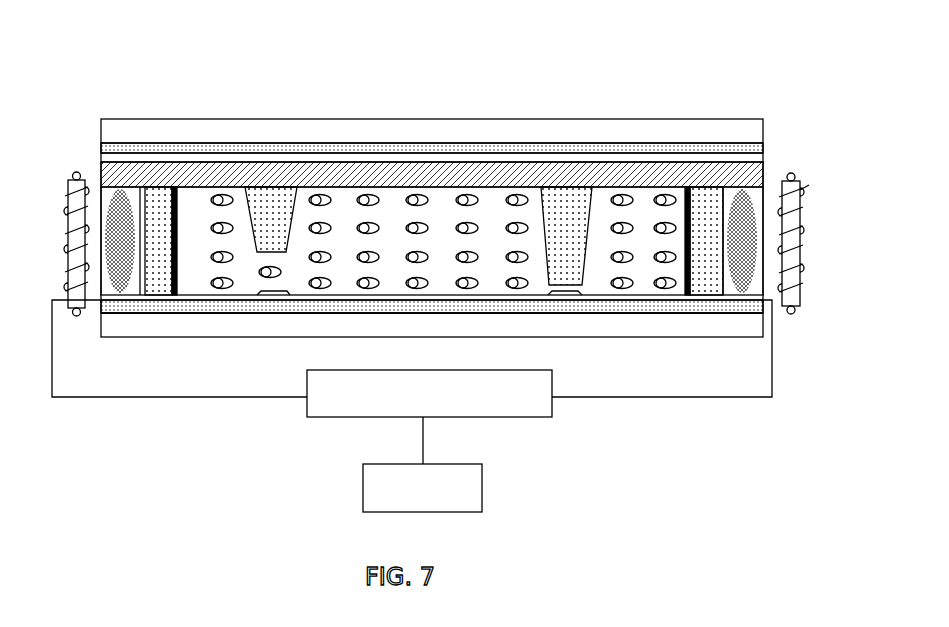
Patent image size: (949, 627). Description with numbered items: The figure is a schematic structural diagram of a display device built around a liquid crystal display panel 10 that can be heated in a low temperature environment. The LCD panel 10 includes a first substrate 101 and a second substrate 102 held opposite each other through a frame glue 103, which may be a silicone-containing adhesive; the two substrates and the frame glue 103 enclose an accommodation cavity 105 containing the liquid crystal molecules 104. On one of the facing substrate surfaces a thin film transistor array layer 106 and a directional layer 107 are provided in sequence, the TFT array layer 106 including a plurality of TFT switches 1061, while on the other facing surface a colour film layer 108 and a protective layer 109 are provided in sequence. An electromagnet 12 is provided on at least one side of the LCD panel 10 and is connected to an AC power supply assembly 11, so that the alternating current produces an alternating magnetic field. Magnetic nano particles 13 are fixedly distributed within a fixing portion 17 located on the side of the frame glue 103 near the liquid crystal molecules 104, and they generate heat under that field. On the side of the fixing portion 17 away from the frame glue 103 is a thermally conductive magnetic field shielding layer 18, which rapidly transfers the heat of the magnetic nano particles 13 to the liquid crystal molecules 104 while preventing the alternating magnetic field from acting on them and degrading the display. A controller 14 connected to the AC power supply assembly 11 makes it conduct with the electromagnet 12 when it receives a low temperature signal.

The liquid crystal display (LCD) panel 10 is at (218, 96).
The AC power supply assembly 11 is at (302, 424).
The electromagnet 12 is at (67, 153).
The magnetic nano particles 13 is at (152, 278).
The controller 14 is at (358, 491).
The fixing portion 17 is at (160, 195).
The thermally conductive magnetic field shielding layer 18 is at (177, 271).
The first substrate 101 is at (190, 320).
The second substrate 102 is at (326, 130).
The frame glue 103 is at (125, 270).
The liquid crystal molecule 104 is at (418, 196).
The accommodation cavity 105 is at (660, 190).
The thin film transistor (TFT) array layer 106 is at (335, 305).
The directional layer 107 is at (468, 297).
The colour film layer 108 is at (540, 148).
The protective layer 109 is at (475, 165).
The TFT switches 1061 is at (266, 298).